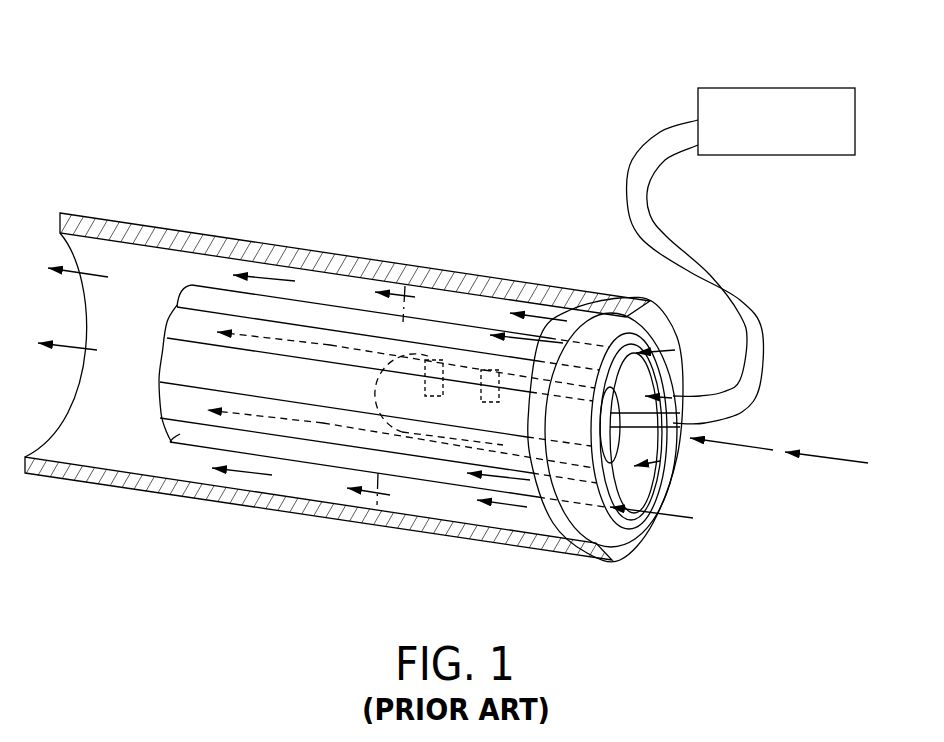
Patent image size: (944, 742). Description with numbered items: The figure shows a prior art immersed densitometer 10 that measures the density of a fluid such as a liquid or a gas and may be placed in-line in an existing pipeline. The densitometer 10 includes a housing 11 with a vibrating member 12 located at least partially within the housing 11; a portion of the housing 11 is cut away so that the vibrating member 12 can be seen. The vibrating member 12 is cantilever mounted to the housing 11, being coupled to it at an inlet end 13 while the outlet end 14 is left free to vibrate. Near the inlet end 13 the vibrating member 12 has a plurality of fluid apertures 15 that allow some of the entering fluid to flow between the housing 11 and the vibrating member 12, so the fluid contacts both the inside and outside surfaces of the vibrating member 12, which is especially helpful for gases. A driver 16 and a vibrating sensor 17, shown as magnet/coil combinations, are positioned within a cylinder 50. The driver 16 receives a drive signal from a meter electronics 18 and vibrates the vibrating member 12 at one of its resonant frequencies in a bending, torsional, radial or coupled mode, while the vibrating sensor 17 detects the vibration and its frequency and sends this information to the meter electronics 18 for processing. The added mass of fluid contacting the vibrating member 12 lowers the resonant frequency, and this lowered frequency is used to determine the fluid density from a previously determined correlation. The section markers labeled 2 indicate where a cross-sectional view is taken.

The immersed densitometer 10 is at (712, 258).
The housing 11 is at (483, 281).
The vibrating member 12 is at (173, 443).
The inlet end 13 is at (674, 342).
The outlet end 14 is at (177, 337).
The fluid apertures 15 is at (640, 390).
The driver 16 is at (496, 350).
The vibrating sensor 17 is at (433, 346).
The meter electronics 18 is at (718, 88).
The cylinder 50 is at (443, 443).
The section line 2- 2 is at (409, 299).